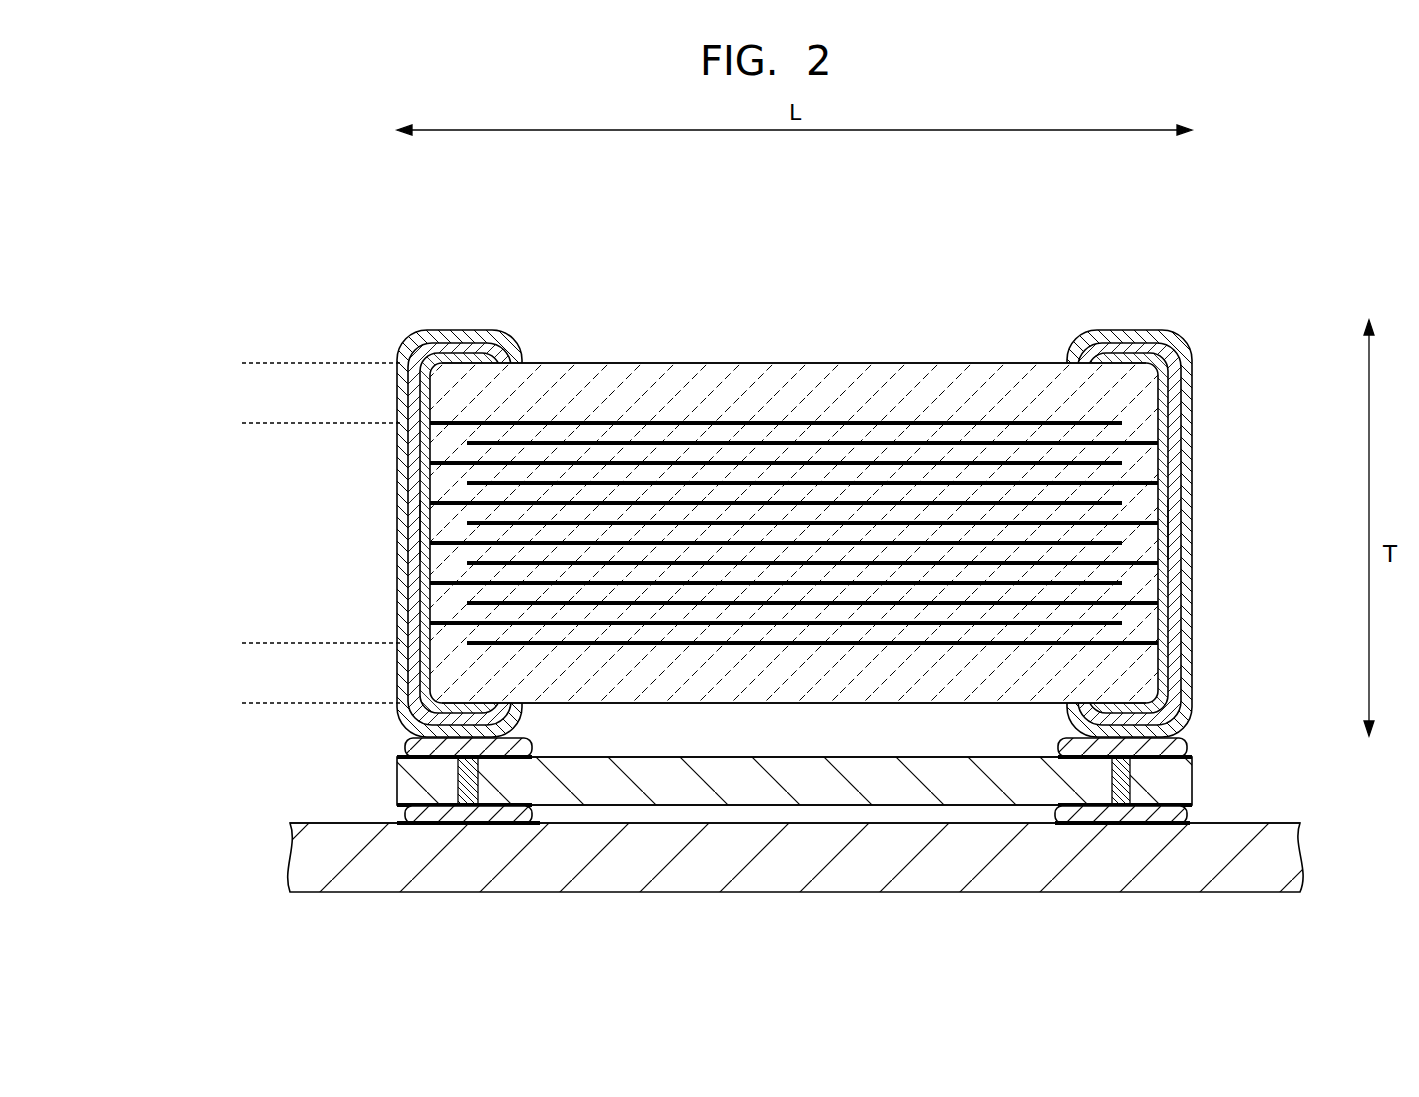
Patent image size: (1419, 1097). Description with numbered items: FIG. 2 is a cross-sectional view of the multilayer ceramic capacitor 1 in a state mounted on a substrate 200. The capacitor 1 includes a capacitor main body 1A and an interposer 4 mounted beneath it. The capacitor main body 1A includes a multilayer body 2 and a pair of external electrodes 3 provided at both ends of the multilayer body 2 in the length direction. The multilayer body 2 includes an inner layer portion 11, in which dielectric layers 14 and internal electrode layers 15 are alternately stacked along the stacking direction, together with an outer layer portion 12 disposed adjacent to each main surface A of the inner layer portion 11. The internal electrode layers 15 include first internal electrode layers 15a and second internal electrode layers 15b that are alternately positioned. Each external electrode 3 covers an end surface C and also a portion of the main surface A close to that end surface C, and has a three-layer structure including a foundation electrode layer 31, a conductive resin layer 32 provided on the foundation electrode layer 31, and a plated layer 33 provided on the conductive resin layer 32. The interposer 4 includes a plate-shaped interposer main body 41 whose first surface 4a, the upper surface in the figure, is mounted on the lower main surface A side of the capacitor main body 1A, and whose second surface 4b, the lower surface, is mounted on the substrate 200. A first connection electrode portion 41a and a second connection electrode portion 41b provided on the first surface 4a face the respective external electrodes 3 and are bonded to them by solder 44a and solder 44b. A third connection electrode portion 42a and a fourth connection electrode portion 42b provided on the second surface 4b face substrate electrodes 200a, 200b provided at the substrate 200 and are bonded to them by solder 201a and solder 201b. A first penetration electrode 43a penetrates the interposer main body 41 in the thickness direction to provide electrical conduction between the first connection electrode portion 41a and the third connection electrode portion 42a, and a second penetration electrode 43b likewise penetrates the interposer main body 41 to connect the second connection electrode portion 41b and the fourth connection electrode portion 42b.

The multilayer ceramic capacitor 1 is at (936, 206).
The capacitor main body 1A is at (903, 256).
The multilayer body 2 is at (889, 346).
The external electrode 3 is at (440, 250).
The interposer 4 is at (1193, 780).
The first surface 4a is at (875, 757).
The second surface 4b is at (893, 806).
The inner layer portion 11 is at (250, 423).
The outer layer portion 12 is at (250, 363).
The dielectric layer 14 is at (470, 475).
The internal electrode layer 15 is at (318, 432).
The first internal electrode layer 15a is at (455, 425).
The second internal electrode layer 15b is at (470, 446).
The foundation electrode layer 31 is at (500, 332).
The conductive resin layer 32 is at (470, 331).
The plated layer 33 is at (443, 330).
The interposer main body 41 is at (820, 786).
The first connection electrode portion 41a is at (405, 748).
The second connection electrode portion 41b is at (1185, 745).
The third connection electrode portion 42a is at (405, 815).
The fourth connection electrode portion 42b is at (1190, 815).
The first penetration electrode 43a is at (457, 780).
The second penetration electrode 43b is at (1140, 795).
The solder 44a is at (525, 745).
The solder 44b is at (1058, 745).
The substrate 200 is at (1255, 872).
The substrate electrode 200a is at (480, 827).
The substrate electrode 200b is at (1110, 827).
The solder 201a is at (522, 815).
The solder 201b is at (1060, 815).
The main surface A is at (800, 362).
The end surface C is at (428, 535).